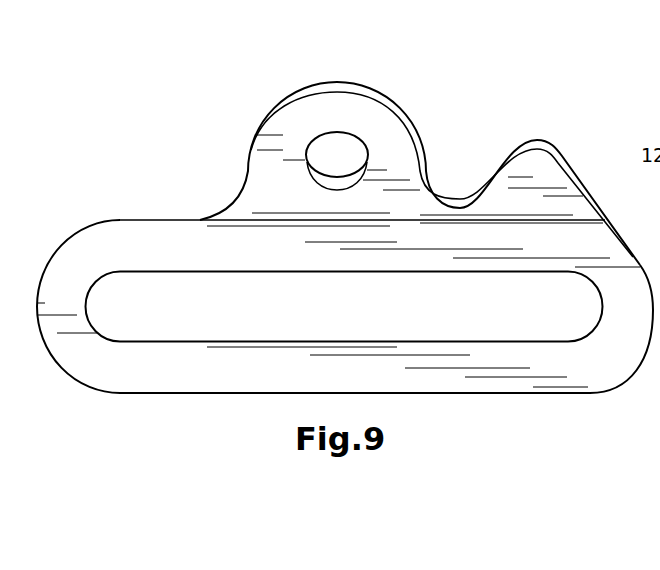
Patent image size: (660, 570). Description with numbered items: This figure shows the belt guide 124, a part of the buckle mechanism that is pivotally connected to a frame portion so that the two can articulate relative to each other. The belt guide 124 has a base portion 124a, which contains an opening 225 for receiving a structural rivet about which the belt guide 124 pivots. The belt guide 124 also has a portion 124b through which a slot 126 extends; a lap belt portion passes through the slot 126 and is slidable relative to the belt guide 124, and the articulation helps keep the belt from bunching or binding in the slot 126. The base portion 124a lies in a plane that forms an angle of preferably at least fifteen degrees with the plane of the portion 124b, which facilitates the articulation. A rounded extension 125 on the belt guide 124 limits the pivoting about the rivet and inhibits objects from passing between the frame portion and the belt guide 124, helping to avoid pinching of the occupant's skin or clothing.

The belt guide 124 is at (565, 437).
The base portion 124a is at (283, 135).
The portion 124b is at (132, 368).
The rounded extension 125 is at (547, 175).
The slot 126 is at (472, 318).
The opening 225 is at (338, 153).